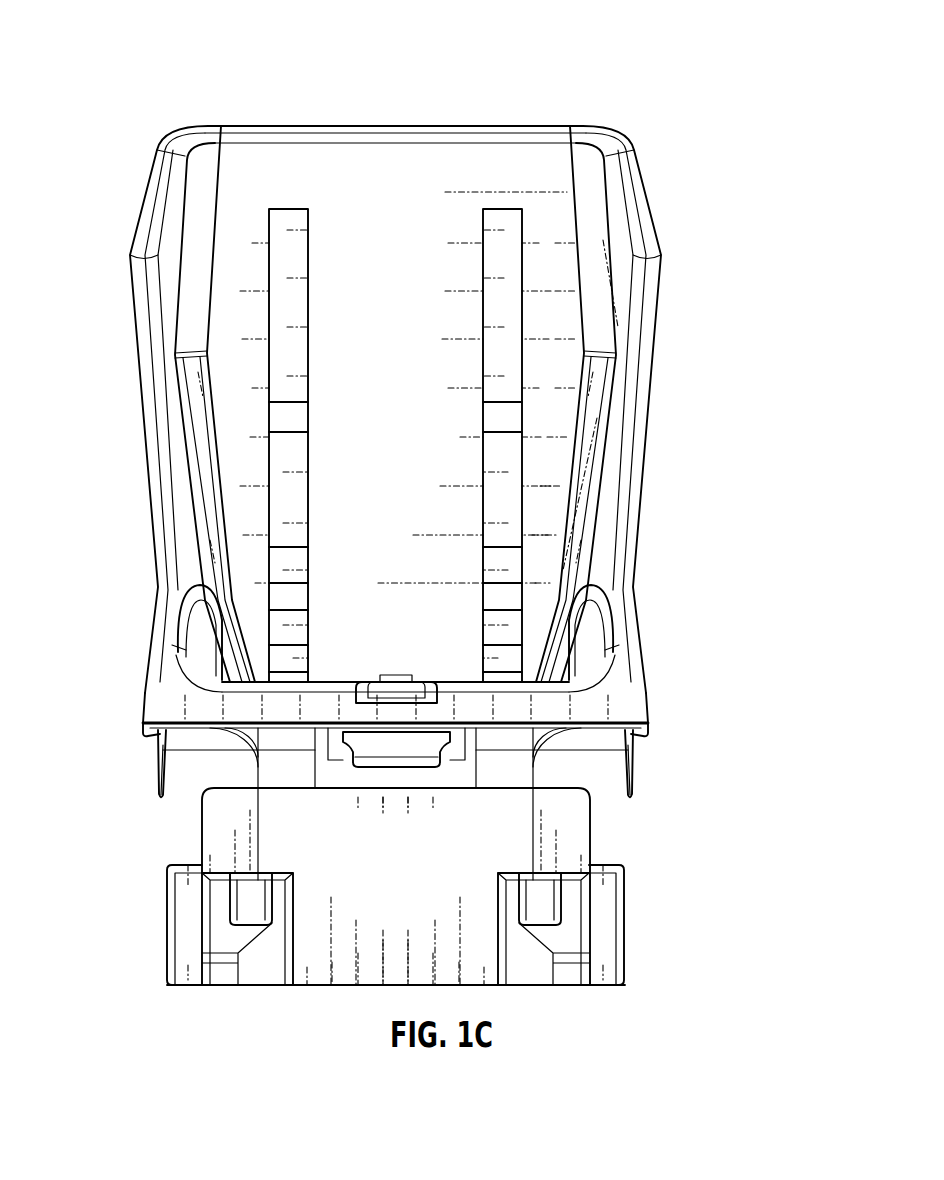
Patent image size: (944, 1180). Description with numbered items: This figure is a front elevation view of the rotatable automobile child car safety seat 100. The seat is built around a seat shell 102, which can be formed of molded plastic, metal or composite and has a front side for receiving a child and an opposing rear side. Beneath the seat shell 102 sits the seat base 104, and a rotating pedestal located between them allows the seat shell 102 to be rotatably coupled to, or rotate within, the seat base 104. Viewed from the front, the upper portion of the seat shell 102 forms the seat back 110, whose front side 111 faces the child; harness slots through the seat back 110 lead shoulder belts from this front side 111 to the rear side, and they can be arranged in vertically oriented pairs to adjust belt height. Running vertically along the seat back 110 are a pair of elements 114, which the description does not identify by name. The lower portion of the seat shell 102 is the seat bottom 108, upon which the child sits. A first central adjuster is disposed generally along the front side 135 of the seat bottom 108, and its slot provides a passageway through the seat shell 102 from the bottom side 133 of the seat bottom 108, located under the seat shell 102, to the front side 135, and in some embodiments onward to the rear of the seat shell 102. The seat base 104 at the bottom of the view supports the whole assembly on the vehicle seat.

The rotatable automobile child car safety seat 100 is at (676, 45).
The seat shell 102 is at (187, 135).
The seat base 104 is at (617, 922).
The seat bottom 108 is at (462, 685).
The seat back 110 is at (419, 434).
The front side of the seat back 111 is at (398, 195).
The guide rail 114 is at (292, 297).
The bottom side of the seat bottom 133 is at (202, 745).
The front side of the seat bottom 135 is at (577, 710).